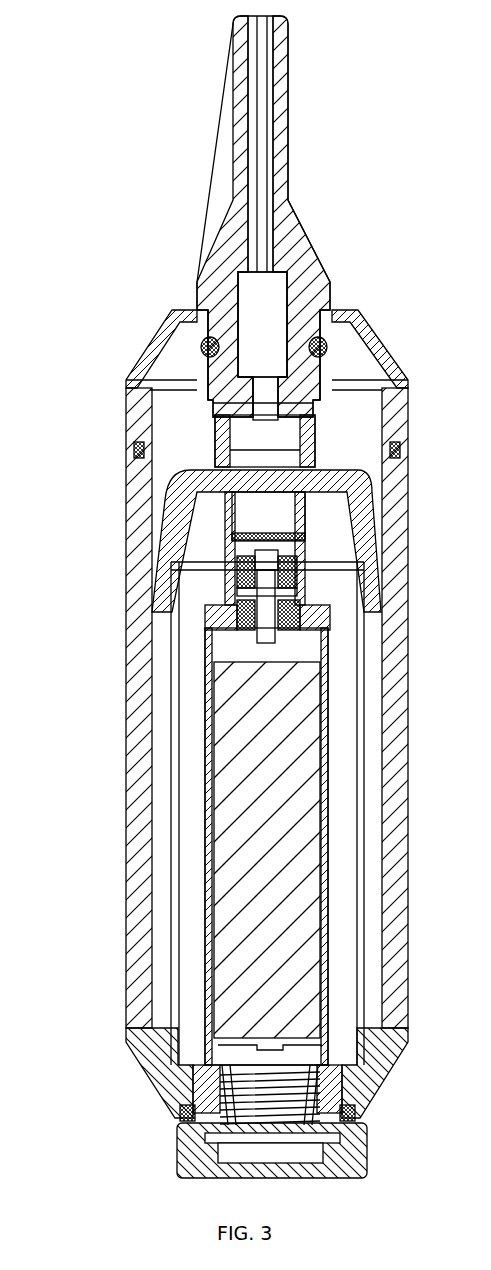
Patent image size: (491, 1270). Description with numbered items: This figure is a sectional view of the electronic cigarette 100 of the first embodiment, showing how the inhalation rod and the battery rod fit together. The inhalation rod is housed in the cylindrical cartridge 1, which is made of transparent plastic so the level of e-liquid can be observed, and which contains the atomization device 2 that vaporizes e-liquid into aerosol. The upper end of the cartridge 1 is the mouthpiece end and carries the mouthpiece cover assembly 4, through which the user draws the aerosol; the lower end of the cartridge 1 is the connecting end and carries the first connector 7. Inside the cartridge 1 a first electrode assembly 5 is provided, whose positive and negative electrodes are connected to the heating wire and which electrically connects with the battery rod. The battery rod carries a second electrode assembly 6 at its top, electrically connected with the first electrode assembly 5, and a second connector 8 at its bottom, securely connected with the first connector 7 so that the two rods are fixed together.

The electronic cigarette 100 is at (352, 72).
The cartridge 1 is at (133, 835).
The atomization device 2 is at (203, 482).
The mouthpiece cover assembly 4 is at (243, 130).
The first electrode assembly 5 is at (227, 578).
The second electrode assembly 6 is at (210, 626).
The first connector 7 is at (152, 1048).
The second connector 8 is at (187, 1150).